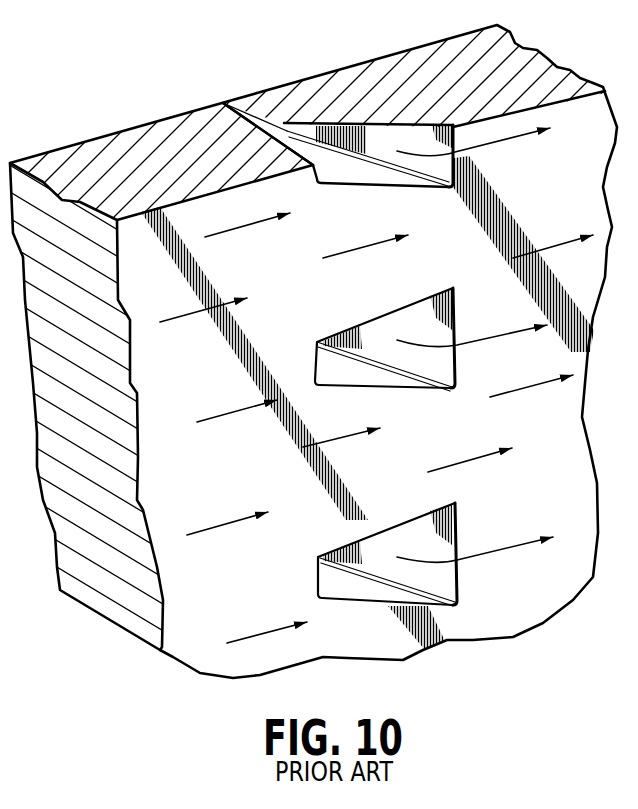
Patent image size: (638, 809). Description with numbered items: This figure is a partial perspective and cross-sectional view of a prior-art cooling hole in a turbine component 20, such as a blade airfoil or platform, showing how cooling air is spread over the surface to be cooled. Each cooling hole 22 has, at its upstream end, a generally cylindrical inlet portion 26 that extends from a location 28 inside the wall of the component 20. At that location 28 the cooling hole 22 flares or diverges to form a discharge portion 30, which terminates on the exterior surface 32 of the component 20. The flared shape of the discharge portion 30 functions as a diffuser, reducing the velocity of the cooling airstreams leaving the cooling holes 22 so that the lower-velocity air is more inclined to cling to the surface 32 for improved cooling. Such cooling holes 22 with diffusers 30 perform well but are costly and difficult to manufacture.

The component 20 is at (67, 146).
The cooling hole 22 is at (219, 114).
The inlet portion 26 is at (240, 115).
The location 28 is at (279, 140).
The discharge portion 30 is at (378, 137).
The exterior surface 32 is at (571, 222).